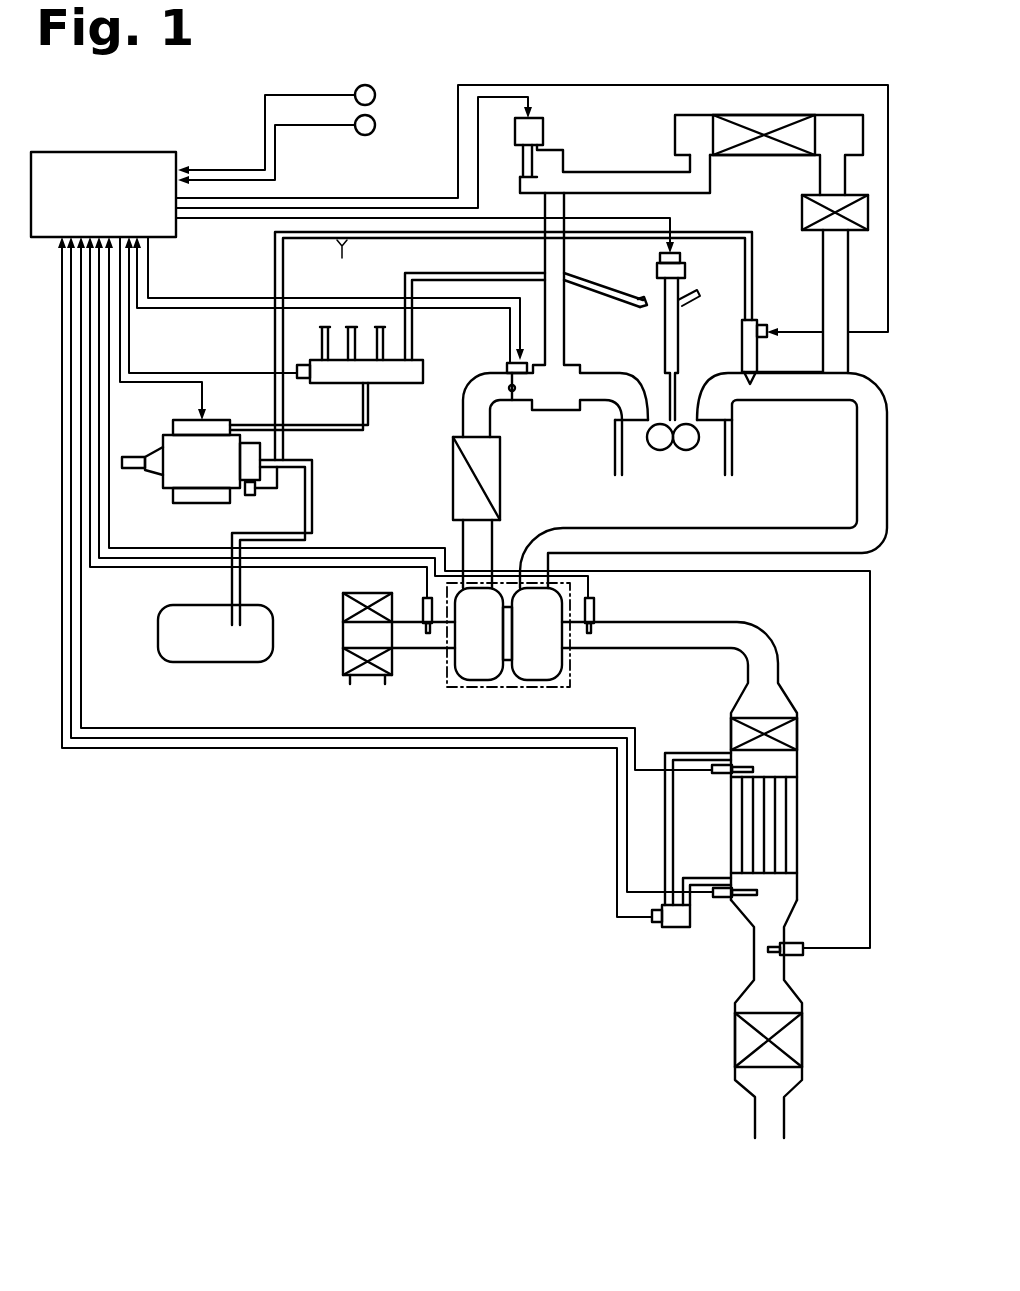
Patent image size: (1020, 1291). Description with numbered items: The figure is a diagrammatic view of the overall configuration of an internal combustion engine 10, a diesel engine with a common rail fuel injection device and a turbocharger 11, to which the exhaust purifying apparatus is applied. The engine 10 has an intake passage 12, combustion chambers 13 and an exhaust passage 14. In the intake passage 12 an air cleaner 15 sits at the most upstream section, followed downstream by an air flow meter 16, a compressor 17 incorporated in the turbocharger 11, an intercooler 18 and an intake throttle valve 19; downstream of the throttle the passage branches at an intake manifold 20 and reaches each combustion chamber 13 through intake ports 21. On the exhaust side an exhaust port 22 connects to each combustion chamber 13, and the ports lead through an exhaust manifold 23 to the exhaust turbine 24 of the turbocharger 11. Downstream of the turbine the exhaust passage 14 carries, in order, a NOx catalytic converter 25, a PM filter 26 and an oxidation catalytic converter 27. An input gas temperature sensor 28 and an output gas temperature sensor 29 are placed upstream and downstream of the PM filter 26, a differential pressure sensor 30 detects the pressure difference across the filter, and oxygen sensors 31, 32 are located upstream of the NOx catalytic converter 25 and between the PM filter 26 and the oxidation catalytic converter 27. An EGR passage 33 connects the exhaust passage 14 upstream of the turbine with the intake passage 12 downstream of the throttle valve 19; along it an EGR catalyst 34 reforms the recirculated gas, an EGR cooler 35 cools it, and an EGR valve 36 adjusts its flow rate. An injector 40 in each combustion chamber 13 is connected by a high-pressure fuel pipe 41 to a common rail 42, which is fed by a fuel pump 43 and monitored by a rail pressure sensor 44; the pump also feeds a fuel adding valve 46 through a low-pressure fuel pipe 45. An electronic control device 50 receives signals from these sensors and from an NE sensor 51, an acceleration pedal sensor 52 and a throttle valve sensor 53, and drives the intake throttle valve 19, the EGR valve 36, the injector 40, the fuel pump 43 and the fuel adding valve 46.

The internal combustion engine 10 is at (605, 455).
The turbocharger 11 is at (437, 679).
The intake passage 12 is at (498, 426).
The combustion chambers 13 is at (663, 445).
The exhaust passage 14 is at (857, 485).
The air cleaner 15 is at (343, 660).
The air flow meter 16 is at (422, 607).
The compressor 17 is at (482, 677).
The intercooler 18 is at (453, 500).
The intake throttle valve 19 is at (513, 400).
The intake manifold 20 is at (601, 369).
The intake ports 21 is at (608, 411).
The exhaust port 22 is at (734, 408).
The exhaust manifold 23 is at (808, 402).
The exhaust turbine 24 is at (538, 677).
The NOx catalytic converter 25 is at (797, 733).
The PM filter 26 is at (792, 822).
The oxidation catalytic converter 27 is at (802, 1040).
The input gas temperature sensor 28 is at (715, 775).
The output gas temperature sensor 29 is at (723, 898).
The differential pressure sensor 30 is at (677, 927).
The oxygen sensor 31 is at (596, 607).
The oxygen sensor 32 is at (800, 957).
The EGR passage 33 is at (640, 158).
The EGR catalyst 34 is at (802, 214).
The EGR cooler 35 is at (735, 153).
The EGR valve 36 is at (544, 124).
The injector 40 is at (657, 285).
The high-pressure fuel pipe 41 is at (432, 275).
The common rail 42 is at (392, 383).
The fuel pump 43 is at (172, 485).
The rail pressure sensor 44 is at (302, 378).
The low-pressure fuel pipe 45 is at (503, 360).
The fuel adding valve 46 is at (741, 337).
The electronic control device 50 is at (132, 152).
The NE sensor 51 is at (376, 95).
The acceleration pedal sensor 52 is at (376, 125).
The throttle valve sensor 53 is at (506, 367).